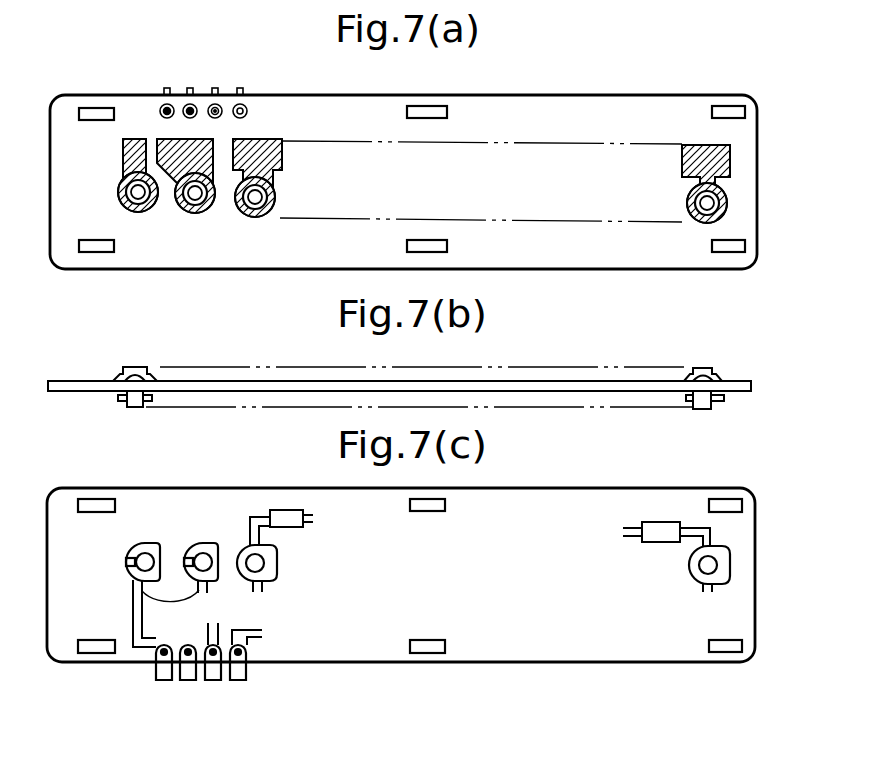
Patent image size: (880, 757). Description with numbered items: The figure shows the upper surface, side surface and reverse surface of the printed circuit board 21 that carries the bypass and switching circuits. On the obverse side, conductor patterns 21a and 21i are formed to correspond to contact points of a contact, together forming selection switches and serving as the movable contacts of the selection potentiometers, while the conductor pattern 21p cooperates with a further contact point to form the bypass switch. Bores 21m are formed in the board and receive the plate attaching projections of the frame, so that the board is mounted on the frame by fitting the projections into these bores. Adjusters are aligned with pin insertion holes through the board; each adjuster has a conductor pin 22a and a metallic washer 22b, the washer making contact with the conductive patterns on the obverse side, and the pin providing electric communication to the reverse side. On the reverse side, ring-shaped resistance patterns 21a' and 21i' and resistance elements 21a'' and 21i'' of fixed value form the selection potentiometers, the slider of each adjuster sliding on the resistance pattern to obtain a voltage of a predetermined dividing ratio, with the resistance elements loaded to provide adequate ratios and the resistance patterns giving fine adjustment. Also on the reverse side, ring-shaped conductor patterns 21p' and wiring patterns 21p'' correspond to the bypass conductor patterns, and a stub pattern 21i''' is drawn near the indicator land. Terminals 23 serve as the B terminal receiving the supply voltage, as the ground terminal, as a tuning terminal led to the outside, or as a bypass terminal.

In FIG. 7A, the printed circuit board 21 is at (613, 108).
In FIG. 7B, the printed circuit board 21 is at (738, 383).
In FIG. 7C, the printed circuit board 21 is at (566, 662).
In FIG. 7A, the bores 21m is at (98, 108).
In FIG. 7C, the bores 21m is at (93, 499).
In FIG. 7A, the conductor pattern 21p is at (166, 135).
In FIG. 7A, the conductor pattern 21i is at (263, 137).
In FIG. 7A, the conductor pattern 21a is at (690, 168).
In FIG. 7A, the conductor pin 22a is at (137, 196).
In FIG. 7A, the metallic washer 22b is at (146, 201).
In FIG. 7A, the terminals 23 is at (168, 88).
In FIG. 7C, the terminals 23 is at (158, 680).
In FIG. 7C, the ring shaped conductor pattern 21p' is at (171, 545).
In FIG. 7C, the wiring pattern 21p'' is at (170, 613).
In FIG. 7C, the resistance pattern 21i' is at (250, 541).
In FIG. 7C, the resistance element 21i'' is at (288, 539).
In FIG. 7C, the indicator stub pattern 21i''' is at (289, 600).
In FIG. 7C, the resistance pattern 21a' is at (683, 573).
In FIG. 7C, the resistance element 21a'' is at (667, 547).